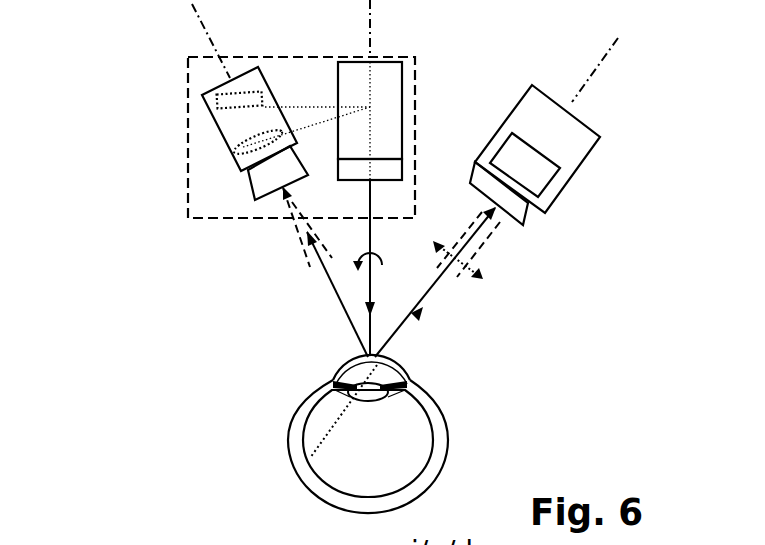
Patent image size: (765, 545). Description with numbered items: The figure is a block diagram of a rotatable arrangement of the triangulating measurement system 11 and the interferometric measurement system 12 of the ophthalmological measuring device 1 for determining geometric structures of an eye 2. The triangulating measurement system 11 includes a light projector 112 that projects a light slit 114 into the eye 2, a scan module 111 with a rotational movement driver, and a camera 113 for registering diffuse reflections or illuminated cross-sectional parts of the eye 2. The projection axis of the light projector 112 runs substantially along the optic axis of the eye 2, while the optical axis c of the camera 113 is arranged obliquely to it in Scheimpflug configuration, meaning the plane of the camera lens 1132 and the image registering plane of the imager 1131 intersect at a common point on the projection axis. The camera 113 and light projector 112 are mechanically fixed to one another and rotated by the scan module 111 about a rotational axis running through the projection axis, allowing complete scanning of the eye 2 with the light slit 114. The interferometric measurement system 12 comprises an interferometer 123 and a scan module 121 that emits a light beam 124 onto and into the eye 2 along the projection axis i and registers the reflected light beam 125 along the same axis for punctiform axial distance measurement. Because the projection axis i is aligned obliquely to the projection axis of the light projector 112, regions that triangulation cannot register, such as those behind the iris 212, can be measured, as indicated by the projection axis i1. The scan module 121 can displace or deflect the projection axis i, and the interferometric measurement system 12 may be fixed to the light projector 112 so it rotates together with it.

The ophthalmological measuring device 1 is at (236, 287).
The triangulating measurement system 11 is at (208, 193).
The scan module 111 is at (392, 170).
The light projector 112 is at (392, 78).
The camera 113 is at (232, 132).
The imager 1131 is at (228, 98).
The camera lens 1132 is at (238, 146).
The light slit 114 is at (372, 327).
The interferometric measurement system 12 is at (583, 143).
The scan module 121 is at (522, 210).
The interferometer 123 is at (543, 178).
The light beam 124 is at (432, 300).
The reflected light beam 125 is at (470, 260).
The eye 2 is at (273, 492).
The iris 212 is at (357, 380).
The projection axis i1 is at (333, 430).
The optical axis of the camera c is at (198, 28).
The projection axis i is at (585, 83).